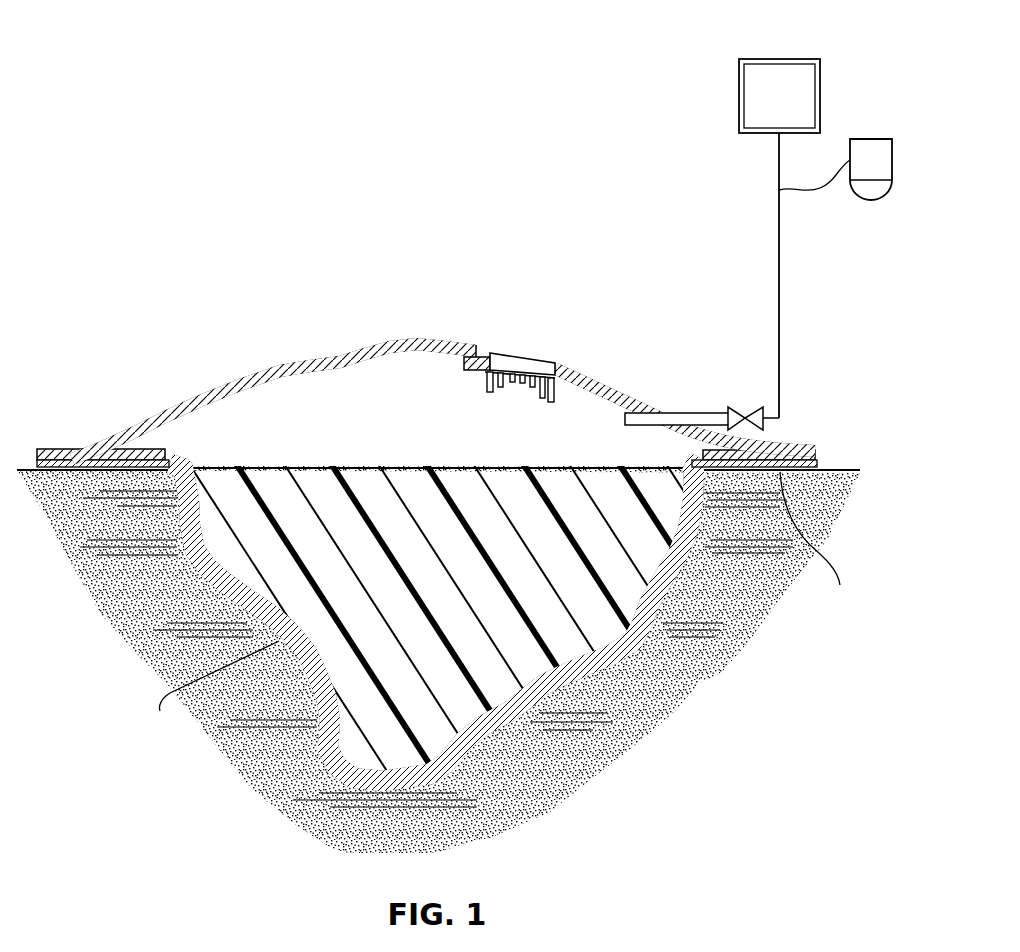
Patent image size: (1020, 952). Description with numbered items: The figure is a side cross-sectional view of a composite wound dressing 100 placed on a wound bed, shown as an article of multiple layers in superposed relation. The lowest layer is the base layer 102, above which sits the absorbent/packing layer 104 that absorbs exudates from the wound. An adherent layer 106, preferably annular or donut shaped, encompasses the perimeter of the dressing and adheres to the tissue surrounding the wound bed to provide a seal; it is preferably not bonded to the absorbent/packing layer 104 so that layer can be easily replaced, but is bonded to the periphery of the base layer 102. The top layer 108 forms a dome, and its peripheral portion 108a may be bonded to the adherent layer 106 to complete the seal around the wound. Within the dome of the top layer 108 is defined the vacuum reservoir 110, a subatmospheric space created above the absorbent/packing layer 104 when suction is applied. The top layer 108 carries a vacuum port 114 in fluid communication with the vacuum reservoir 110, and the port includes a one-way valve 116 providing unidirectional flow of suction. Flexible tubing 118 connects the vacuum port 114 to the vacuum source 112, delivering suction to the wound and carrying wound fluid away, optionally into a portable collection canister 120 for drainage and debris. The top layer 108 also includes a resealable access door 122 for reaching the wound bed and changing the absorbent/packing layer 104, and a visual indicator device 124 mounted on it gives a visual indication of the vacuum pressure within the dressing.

The composite wound dressing 100 is at (207, 352).
The base layer 102 is at (670, 610).
The absorbent/packing layer 104 is at (608, 572).
The adherent layer 106 is at (115, 453).
The top layer 108 is at (282, 365).
The peripheral portion of the top layer 108a is at (773, 447).
The vacuum reservoir 110 is at (400, 397).
The vacuum source 112 is at (784, 73).
The vacuum port 114 is at (676, 414).
The one-way valve 116 is at (745, 410).
The flexible tubing 118 is at (781, 278).
The collection canister 120 is at (872, 138).
The access door 122 is at (443, 336).
The visual indicator device 124 is at (525, 354).